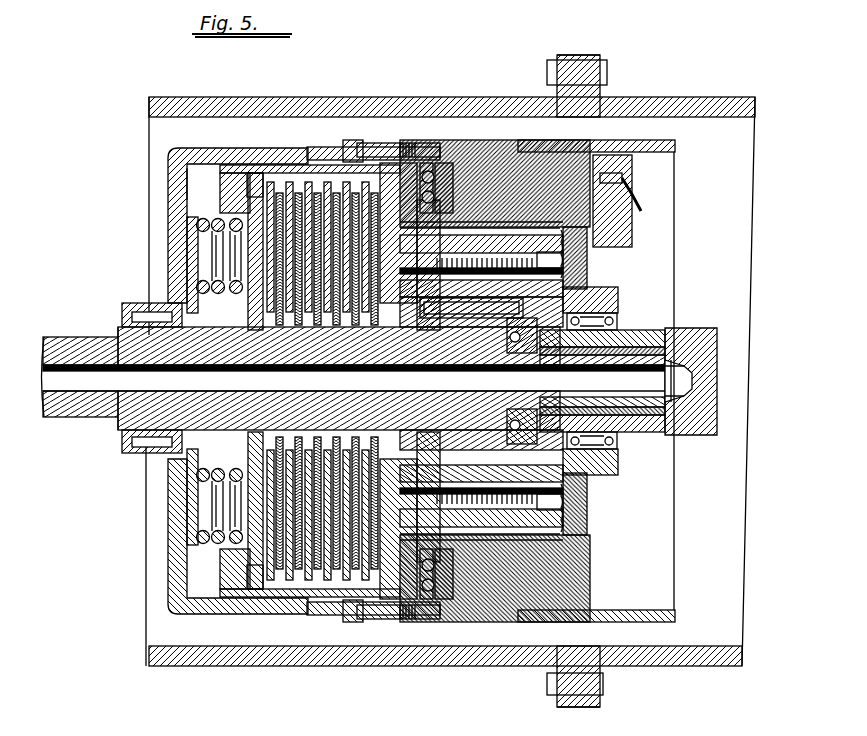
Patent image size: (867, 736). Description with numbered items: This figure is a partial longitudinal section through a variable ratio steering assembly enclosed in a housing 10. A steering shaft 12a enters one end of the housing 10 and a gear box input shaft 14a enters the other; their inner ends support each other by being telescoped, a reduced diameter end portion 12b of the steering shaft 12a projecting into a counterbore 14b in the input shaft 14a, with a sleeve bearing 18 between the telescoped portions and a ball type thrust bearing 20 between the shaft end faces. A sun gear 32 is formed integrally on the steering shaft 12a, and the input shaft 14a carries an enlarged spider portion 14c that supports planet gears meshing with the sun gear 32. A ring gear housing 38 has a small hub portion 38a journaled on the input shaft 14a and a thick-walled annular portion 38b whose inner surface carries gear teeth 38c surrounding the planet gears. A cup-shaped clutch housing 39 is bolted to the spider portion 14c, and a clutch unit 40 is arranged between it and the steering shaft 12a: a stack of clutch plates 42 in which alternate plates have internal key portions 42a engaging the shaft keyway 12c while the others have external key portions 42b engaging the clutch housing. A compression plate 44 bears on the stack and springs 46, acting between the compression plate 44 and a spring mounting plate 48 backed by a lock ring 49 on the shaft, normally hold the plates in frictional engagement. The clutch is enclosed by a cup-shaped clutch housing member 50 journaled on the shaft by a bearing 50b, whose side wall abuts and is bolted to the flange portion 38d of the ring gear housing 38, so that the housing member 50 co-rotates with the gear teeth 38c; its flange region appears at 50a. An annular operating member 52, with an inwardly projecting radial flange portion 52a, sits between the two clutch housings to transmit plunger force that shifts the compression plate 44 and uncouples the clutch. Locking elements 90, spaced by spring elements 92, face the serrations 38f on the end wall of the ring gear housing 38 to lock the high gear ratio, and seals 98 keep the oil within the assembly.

The housing 10 is at (408, 92).
The steering shaft 12a is at (53, 420).
The reduced diameter end portion 12b is at (562, 402).
The keyway 12c is at (190, 465).
The gear box input shaft 14a is at (702, 326).
The counterbore 14b is at (642, 350).
The spider portion 14c is at (580, 298).
The sleeve bearing 18 is at (690, 400).
The ball type thrust bearing 20 is at (512, 352).
The sun gear 32 is at (437, 300).
The ring gear housing 38 is at (487, 632).
The hub portion 38a is at (604, 458).
The large diameter annular portion 38b is at (566, 584).
The gear teeth 38c is at (481, 225).
The flange portion 38d is at (428, 140).
The serrations 38f is at (588, 505).
The clutch housing 39 is at (390, 602).
The clutch unit 40 is at (290, 563).
The clutch plates 42 is at (304, 578).
The internal key portions 42a is at (258, 330).
The external key portions 42b is at (329, 578).
The compression plate 44 is at (185, 616).
The springs 46 is at (206, 537).
The spring mounting plate 48 is at (186, 542).
The lock ring 49 is at (150, 306).
The clutch housing member 50 is at (160, 211).
The cup flange 50a is at (185, 178).
The bearing 50b is at (142, 453).
The operating member 52 is at (318, 158).
The radial flange portion 52a is at (412, 600).
The locking elements 90 is at (624, 221).
The spring elements 92 is at (639, 201).
The seals 98 is at (600, 348).